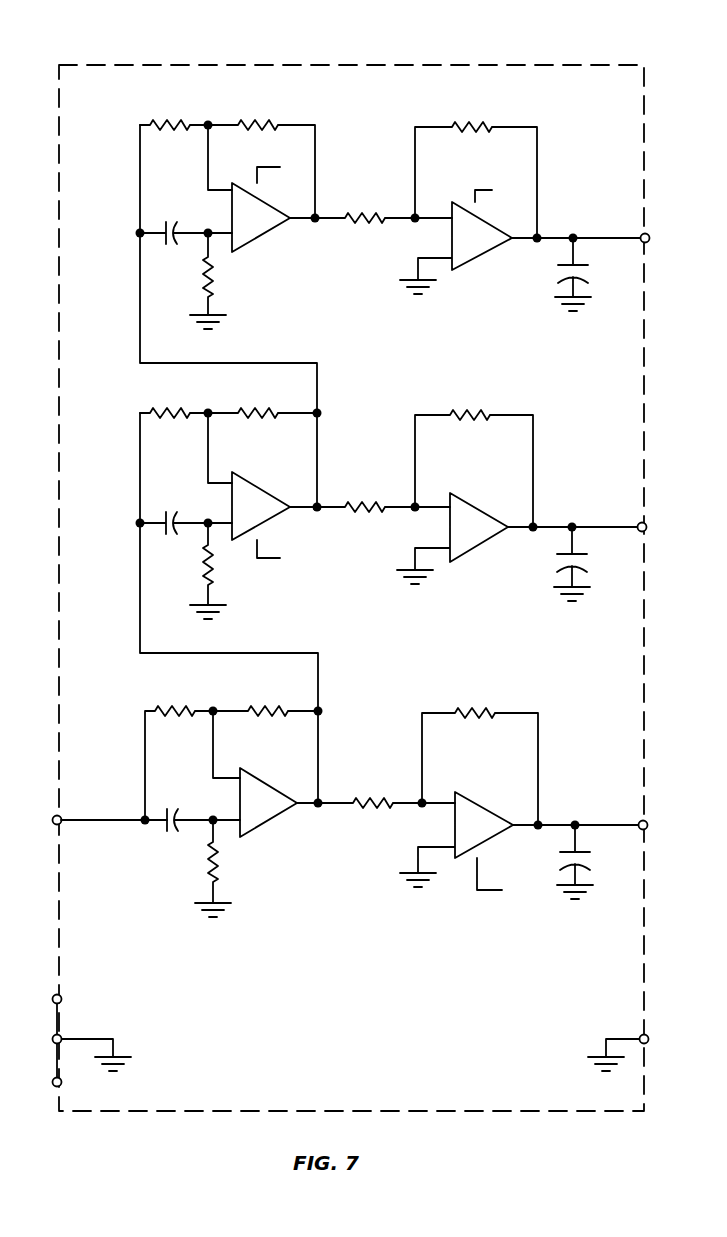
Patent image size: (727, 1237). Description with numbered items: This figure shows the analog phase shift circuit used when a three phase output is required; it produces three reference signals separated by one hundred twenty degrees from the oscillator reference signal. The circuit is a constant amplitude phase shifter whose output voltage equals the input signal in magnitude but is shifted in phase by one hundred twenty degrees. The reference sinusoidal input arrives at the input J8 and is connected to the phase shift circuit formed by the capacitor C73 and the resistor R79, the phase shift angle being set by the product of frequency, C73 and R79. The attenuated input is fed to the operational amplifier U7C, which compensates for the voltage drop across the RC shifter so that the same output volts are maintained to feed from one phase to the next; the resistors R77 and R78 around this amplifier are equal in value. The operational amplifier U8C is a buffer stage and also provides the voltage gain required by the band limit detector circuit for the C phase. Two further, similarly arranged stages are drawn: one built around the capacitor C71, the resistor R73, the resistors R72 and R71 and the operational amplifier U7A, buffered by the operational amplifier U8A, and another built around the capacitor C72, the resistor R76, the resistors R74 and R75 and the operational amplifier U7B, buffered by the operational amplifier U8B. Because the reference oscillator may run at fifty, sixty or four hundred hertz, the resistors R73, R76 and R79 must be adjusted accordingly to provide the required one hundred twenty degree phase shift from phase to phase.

The resistor R71 is at (261, 153).
The resistor R72 is at (174, 109).
The resistor R73 is at (223, 281).
The resistor R74 is at (174, 400).
The resistor R75 is at (262, 400).
The resistor R76 is at (223, 571).
The resistor R77 is at (179, 747).
The resistor R78 is at (265, 695).
The resistor R79 is at (229, 868).
The capacitor C71 is at (186, 217).
The capacitor C72 is at (186, 511).
The capacitor C73 is at (198, 805).
The operational amplifier U7A is at (261, 209).
The operational amplifier U7B is at (261, 515).
The operational amplifier U7C is at (268, 802).
The operational amplifier U8A is at (522, 208).
The operational amplifier U8B is at (519, 497).
The operational amplifier U8C is at (521, 799).
The reference sinusoidal input J8 is at (110, 808).